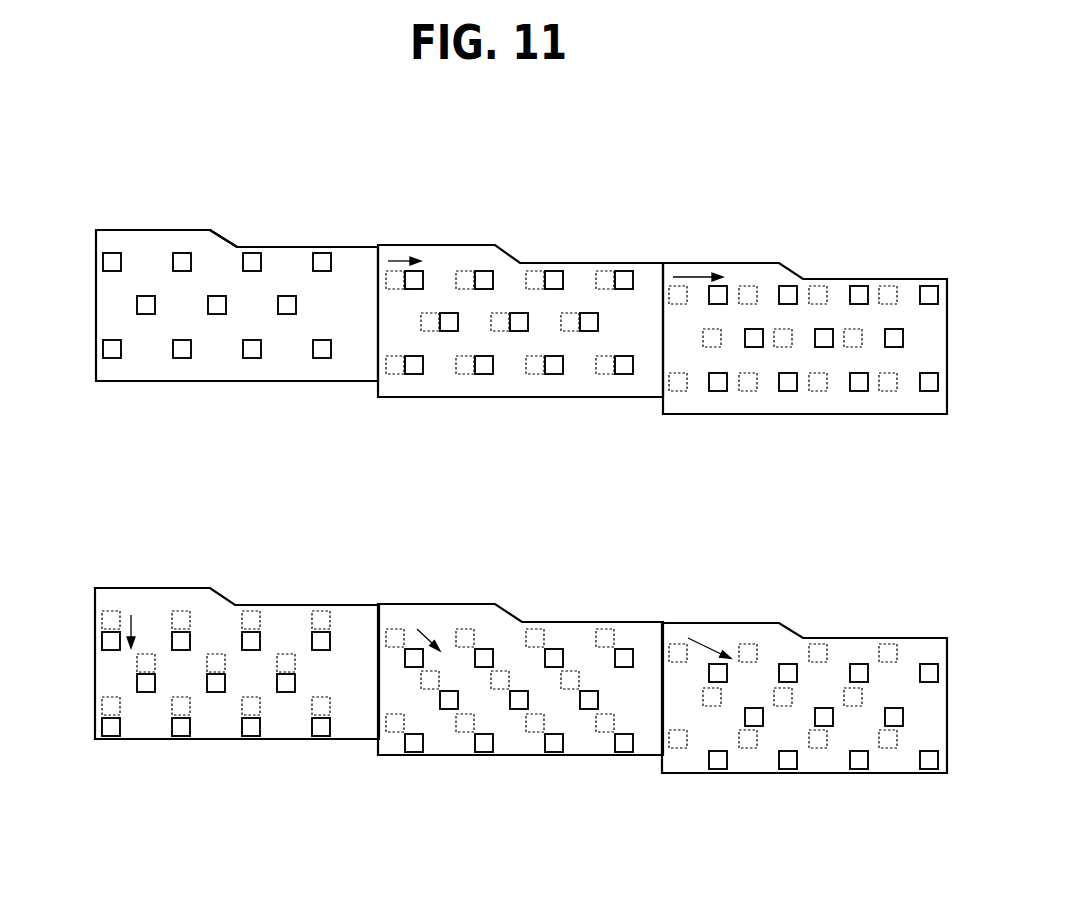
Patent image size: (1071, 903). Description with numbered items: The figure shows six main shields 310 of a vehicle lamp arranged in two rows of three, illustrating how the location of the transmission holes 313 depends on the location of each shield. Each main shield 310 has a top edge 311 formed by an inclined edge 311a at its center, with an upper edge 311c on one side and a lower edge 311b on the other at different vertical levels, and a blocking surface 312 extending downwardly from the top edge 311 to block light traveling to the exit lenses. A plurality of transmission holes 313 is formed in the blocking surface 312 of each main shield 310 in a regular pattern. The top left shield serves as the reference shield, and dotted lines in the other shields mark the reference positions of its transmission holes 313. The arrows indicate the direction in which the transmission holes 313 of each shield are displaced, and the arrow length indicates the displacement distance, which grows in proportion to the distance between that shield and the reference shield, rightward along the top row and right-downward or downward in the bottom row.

The main shield 310 is at (96, 367).
The top edge 311 is at (237, 196).
The inclined edge 311a is at (222, 237).
The lower edge 311b is at (307, 215).
The upper edge 311c is at (160, 229).
The blocking surface 312 is at (105, 323).
The transmission hole 313 is at (142, 303).